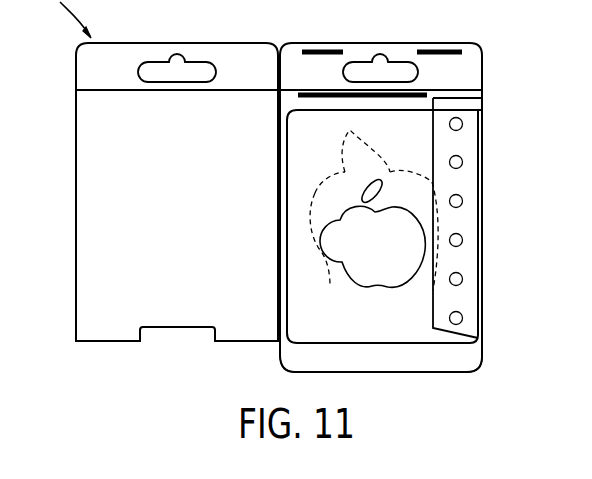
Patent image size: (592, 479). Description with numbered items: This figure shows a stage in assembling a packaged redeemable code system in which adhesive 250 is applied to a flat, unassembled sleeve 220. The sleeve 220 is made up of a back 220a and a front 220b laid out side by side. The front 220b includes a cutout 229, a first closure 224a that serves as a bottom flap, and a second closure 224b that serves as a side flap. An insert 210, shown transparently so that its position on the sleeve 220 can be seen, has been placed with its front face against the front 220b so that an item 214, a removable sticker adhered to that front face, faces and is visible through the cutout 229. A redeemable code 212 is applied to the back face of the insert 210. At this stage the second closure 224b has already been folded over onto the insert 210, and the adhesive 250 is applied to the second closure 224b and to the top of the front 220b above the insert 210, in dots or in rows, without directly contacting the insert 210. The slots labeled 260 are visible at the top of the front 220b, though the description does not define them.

The insert 210 is at (303, 276).
The redeemable code 212 is at (330, 323).
The item 214 is at (305, 243).
The sleeve 220 is at (278, 188).
The back 220a is at (198, 221).
The front 220b is at (466, 78).
The first closure 224a is at (462, 357).
The second closure 224b is at (470, 124).
The cutout 229 is at (357, 218).
The adhesive 250 is at (461, 128).
The slots 260 is at (440, 45).